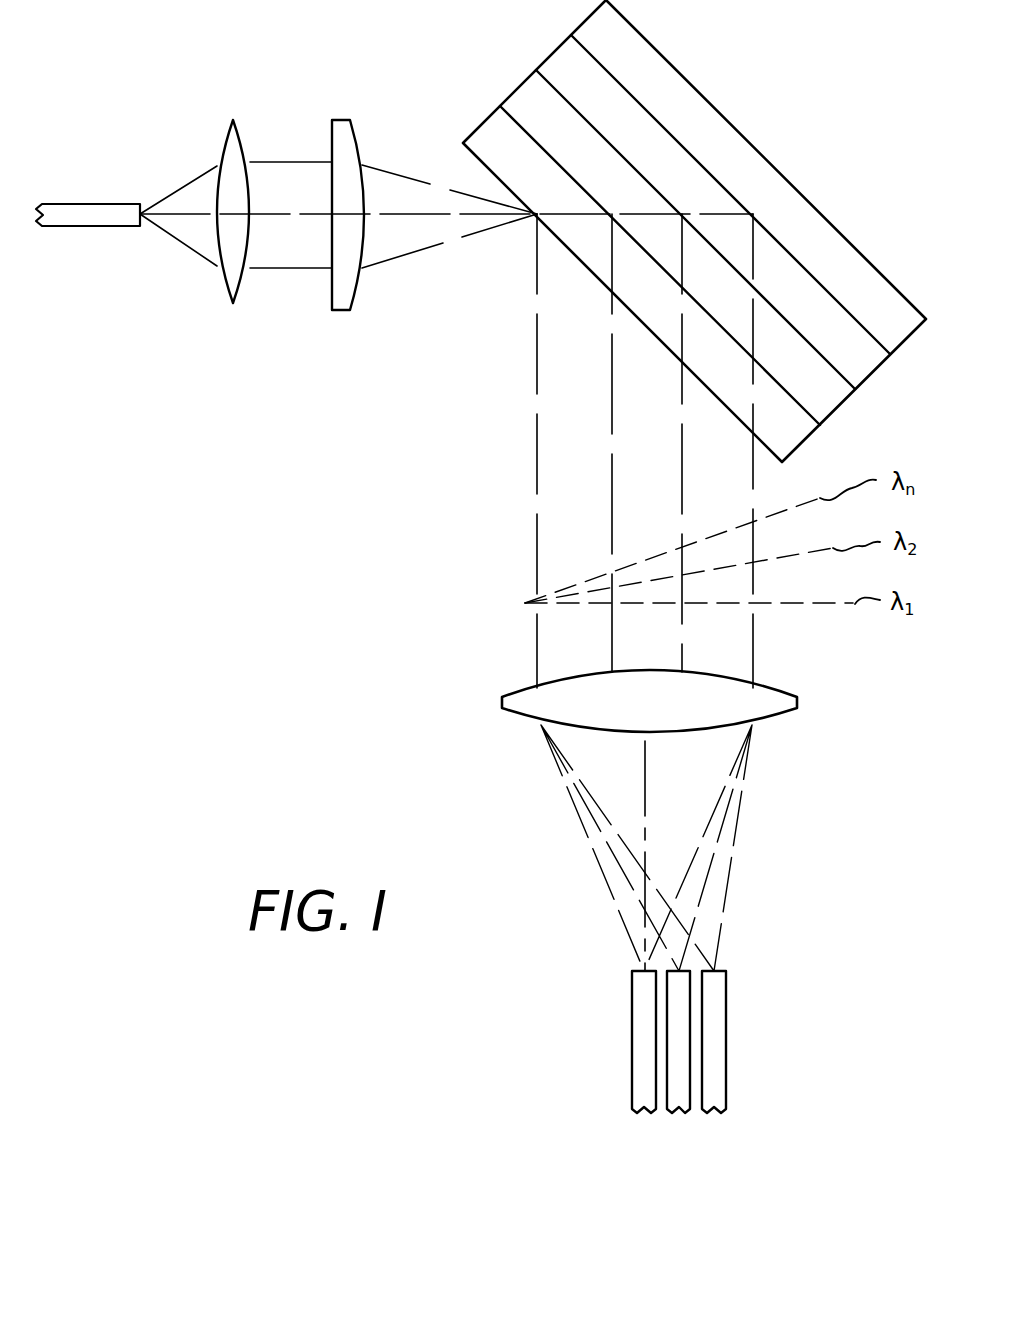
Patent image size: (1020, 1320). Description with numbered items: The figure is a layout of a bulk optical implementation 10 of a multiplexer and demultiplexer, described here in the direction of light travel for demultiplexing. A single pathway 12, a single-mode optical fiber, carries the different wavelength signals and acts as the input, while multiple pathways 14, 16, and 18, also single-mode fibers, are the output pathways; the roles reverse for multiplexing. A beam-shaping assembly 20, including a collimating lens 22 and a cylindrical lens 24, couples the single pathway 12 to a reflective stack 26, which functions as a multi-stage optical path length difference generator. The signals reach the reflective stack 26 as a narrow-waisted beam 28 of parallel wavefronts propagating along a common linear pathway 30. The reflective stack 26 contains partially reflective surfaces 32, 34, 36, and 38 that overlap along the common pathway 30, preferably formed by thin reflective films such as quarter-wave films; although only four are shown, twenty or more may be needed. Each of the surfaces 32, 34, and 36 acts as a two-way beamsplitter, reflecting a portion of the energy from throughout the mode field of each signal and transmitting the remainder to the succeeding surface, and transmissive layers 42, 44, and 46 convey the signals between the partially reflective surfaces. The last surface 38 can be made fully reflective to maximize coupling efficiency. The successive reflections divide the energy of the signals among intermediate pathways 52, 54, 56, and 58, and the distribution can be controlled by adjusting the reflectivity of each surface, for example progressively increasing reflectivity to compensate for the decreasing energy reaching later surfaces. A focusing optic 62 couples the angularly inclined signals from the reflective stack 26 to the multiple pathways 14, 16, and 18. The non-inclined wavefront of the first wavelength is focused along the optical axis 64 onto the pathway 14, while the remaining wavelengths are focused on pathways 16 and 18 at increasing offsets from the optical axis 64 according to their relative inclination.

The bulk optical implementation 10 is at (400, 386).
The single pathway 12 is at (72, 228).
The multiple pathway 14 is at (640, 1077).
The multiple pathway 16 is at (675, 1007).
The multiple pathway 18 is at (717, 995).
The beam-shaping assembly 20 is at (370, 313).
The collimating lens 22 is at (224, 142).
The cylindrical lens 24 is at (330, 130).
The reflective stack 26 is at (634, 28).
The narrow-waisted beam 28 is at (433, 246).
The common linear pathway 30 is at (416, 212).
The partially reflective surface 32 is at (463, 148).
The partially reflective surface 34 is at (538, 146).
The partially reflective surface 36 is at (590, 124).
The partially reflective surface 38 is at (608, 72).
The transmissive layer 42 is at (794, 435).
The transmissive layer 44 is at (814, 377).
The transmissive layer 46 is at (844, 339).
The intermediate pathway 52 is at (537, 470).
The intermediate pathway 54 is at (612, 506).
The intermediate pathway 56 is at (682, 463).
The intermediate pathway 58 is at (753, 508).
The focusing optic 62 is at (520, 712).
The optical axis 64 is at (646, 786).